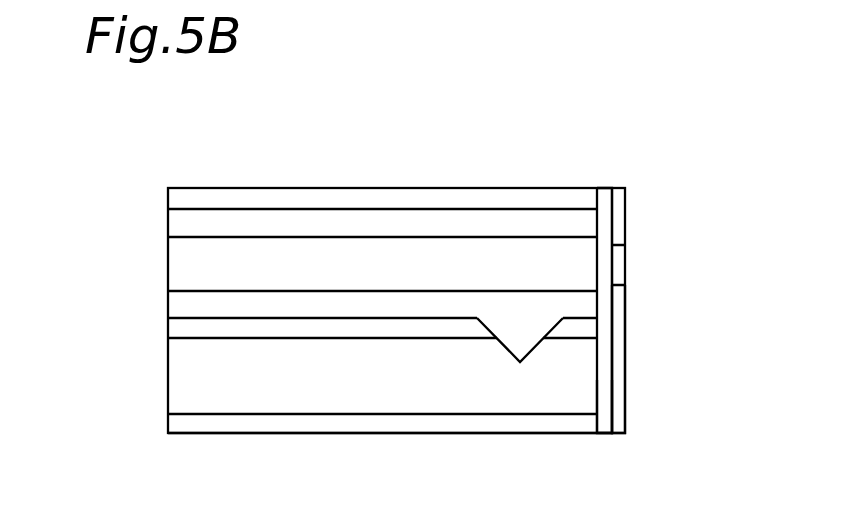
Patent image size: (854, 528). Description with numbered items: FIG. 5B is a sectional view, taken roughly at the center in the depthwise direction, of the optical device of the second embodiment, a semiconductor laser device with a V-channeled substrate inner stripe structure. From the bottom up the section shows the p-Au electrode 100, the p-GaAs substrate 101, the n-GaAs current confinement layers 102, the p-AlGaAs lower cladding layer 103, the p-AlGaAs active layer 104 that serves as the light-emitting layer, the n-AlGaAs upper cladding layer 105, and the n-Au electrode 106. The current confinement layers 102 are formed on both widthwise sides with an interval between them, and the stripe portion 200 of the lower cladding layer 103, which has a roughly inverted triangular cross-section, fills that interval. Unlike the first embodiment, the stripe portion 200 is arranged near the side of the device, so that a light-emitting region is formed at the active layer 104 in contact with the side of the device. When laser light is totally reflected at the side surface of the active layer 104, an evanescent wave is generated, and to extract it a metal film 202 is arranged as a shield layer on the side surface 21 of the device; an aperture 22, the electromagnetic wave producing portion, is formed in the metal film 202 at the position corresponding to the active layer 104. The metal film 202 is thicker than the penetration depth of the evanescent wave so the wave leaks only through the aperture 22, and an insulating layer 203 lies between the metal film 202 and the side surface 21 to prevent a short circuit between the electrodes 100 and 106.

The p-Au electrode 100 is at (173, 422).
The p-GaAs substrate 101 is at (173, 383).
The n-GaAs current confinement layers 102 is at (173, 335).
The p-AlGaAs lower cladding layer 103 is at (173, 307).
The p-AlGaAs active layer 104 is at (173, 265).
The n-AlGaAs upper cladding layer 105 is at (278, 221).
The n-Au electrode 106 is at (490, 195).
The stripe portion 200 is at (530, 333).
The side surface 21 is at (600, 217).
The aperture 22 is at (617, 263).
The metal film 202 is at (623, 332).
The insulating layer 203 is at (605, 405).